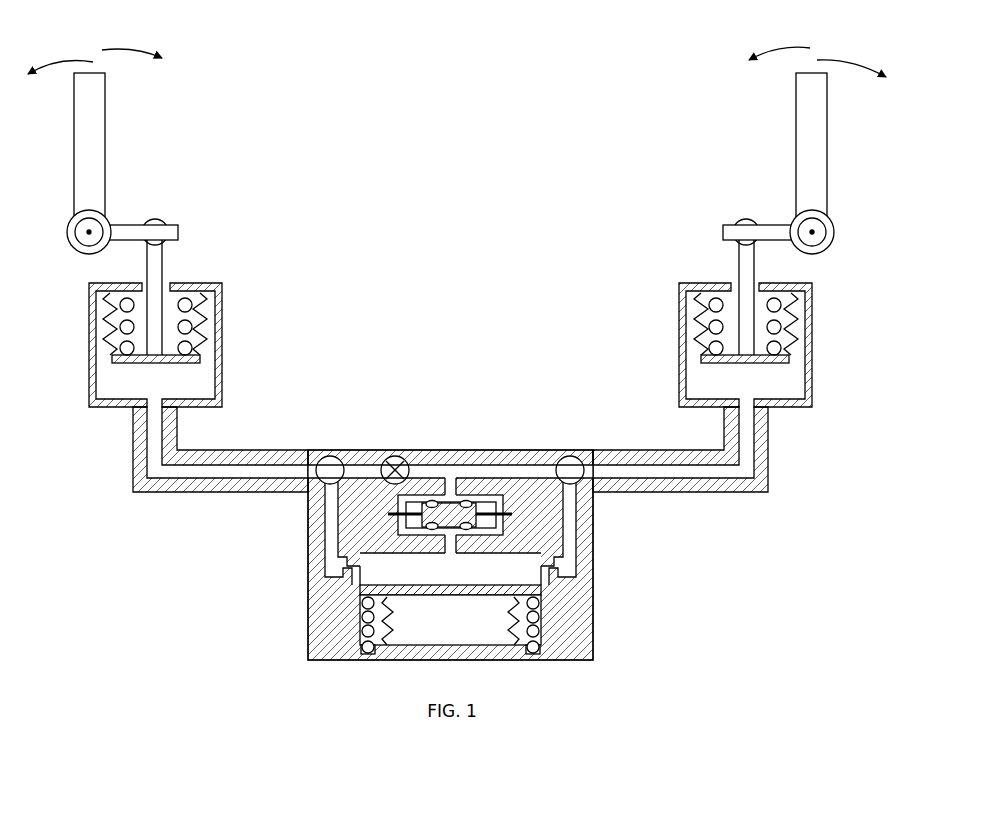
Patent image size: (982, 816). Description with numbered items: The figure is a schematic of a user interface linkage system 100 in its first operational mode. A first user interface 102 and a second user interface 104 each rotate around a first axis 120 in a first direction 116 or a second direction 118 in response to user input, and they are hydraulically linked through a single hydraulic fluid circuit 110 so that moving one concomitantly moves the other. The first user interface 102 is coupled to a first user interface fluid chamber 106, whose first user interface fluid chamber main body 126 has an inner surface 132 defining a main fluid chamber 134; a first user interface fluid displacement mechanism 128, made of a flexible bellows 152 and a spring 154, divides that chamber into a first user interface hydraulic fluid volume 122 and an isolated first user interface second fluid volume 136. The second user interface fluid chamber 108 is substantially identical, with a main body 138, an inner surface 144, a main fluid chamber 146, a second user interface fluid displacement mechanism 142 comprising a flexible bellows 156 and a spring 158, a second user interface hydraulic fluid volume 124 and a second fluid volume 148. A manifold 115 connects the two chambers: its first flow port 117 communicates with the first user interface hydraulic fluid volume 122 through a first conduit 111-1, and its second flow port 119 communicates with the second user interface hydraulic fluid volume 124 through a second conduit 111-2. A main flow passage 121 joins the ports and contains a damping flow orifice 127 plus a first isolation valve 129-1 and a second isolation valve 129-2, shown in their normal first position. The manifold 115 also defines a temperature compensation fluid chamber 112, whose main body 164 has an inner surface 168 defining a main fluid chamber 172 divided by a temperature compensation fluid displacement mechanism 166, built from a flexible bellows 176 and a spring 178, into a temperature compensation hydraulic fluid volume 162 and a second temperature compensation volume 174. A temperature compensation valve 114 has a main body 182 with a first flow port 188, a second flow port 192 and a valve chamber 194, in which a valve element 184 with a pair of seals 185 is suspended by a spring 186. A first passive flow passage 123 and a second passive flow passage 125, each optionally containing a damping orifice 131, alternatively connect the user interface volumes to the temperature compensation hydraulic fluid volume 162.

The user interface linkage system 100 is at (549, 145).
The first user interface 102 is at (106, 183).
The second user interface 104 is at (795, 183).
The first user interface fluid chamber 106 is at (239, 333).
The second user interface fluid chamber 108 is at (671, 342).
The hydraulic fluid circuit 110 is at (455, 354).
The first conduit 111-1 is at (141, 491).
The second conduit 111-2 is at (760, 491).
The temperature compensation fluid chamber 112 is at (549, 650).
The temperature compensation valve 114 is at (523, 526).
The manifold 115 is at (508, 451).
The first direction 116 is at (134, 58).
The manifold first flow port 117 is at (306, 470).
The second direction 118 is at (45, 63).
The manifold second flow port 119 is at (596, 470).
The first axis 120 is at (88, 232).
The main flow passage 121 is at (374, 465).
The first user interface hydraulic fluid volume 122 is at (116, 400).
The first passive flow passage 123 is at (330, 505).
The second user interface hydraulic fluid volume 124 is at (786, 398).
The second passive flow passage 125 is at (576, 557).
The first user interface fluid chamber main body 126 is at (214, 285).
The damping flow orifice 127 is at (397, 457).
The first user interface fluid displacement mechanism 128 is at (186, 373).
The first isolation valve 129-1 is at (333, 457).
The second isolation valve 129-2 is at (571, 457).
The damping orifice 131 is at (350, 571).
The inner surface 132 is at (205, 372).
The main fluid chamber 134 is at (167, 391).
The first user interface second fluid volume 136 is at (182, 289).
The second user interface fluid chamber main body 138 is at (813, 310).
The second user interface fluid displacement mechanism 142 is at (719, 372).
The inner surface 144 is at (794, 372).
The main fluid chamber 146 is at (763, 391).
The second user interface second fluid volume 148 is at (758, 303).
The first user interface fluid displacement mechanism flexible bellows 152 is at (104, 309).
The first user interface displacement mechanism spring 154 is at (119, 349).
The second user interface fluid displacement mechanism flexible bellows 156 is at (697, 316).
The second user interface displacement mechanism spring 158 is at (709, 345).
The temperature compensation hydraulic fluid volume 162 is at (506, 580).
The temperature compensation fluid chamber main body 164 is at (578, 606).
The temperature compensation fluid displacement mechanism 166 is at (359, 591).
The inner surface 168 is at (519, 632).
The main fluid chamber 172 is at (391, 578).
The second temperature compensation volume 174 is at (444, 620).
The flexible bellows 176 is at (384, 647).
The spring 178 is at (362, 632).
The main body 182 is at (572, 505).
The valve element 184 is at (407, 505).
The seals 185 is at (468, 531).
The spring 186 is at (390, 516).
The first flow port 188 is at (466, 458).
The second flow port 192 is at (450, 553).
The valve chamber 194 is at (421, 497).